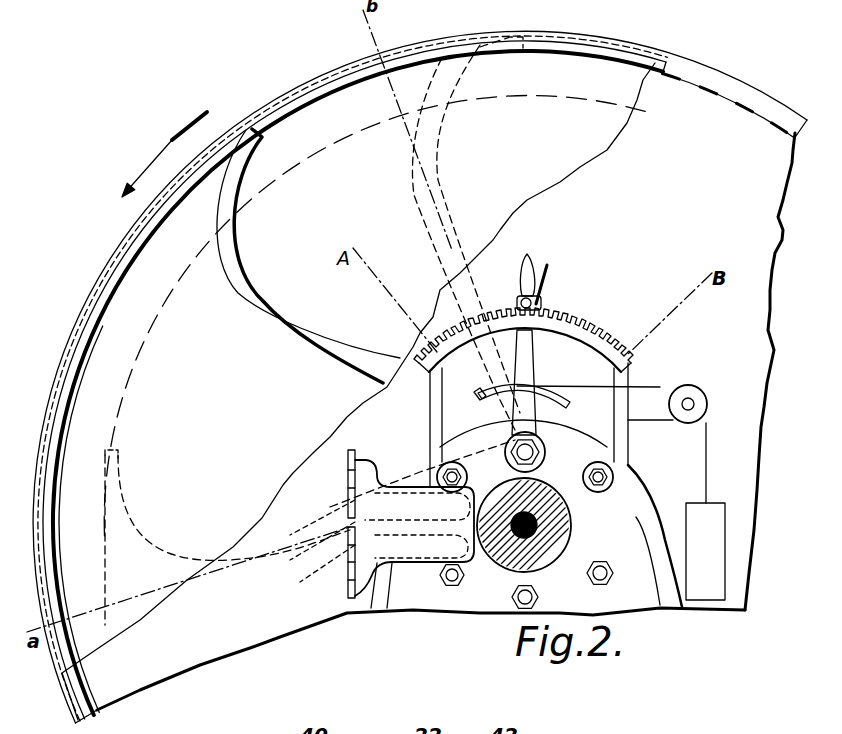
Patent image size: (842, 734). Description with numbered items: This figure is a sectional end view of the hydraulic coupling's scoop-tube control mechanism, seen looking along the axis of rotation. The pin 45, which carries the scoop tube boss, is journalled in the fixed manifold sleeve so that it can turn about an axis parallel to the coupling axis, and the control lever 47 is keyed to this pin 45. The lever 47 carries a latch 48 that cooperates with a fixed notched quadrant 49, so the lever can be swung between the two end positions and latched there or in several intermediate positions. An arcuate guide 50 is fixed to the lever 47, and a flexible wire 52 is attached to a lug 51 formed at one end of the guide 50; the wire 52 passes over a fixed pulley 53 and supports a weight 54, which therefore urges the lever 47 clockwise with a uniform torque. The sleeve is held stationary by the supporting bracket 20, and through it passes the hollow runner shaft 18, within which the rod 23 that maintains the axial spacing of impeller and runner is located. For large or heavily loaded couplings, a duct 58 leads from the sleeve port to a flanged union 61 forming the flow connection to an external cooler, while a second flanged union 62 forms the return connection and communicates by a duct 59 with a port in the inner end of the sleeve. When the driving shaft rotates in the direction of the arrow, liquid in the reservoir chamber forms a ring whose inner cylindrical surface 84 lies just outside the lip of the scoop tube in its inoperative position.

The inner cylindrical surface 84 is at (130, 381).
The control lever 47 is at (531, 266).
The latch 48 is at (552, 270).
The fixed notched quadrant 49 is at (572, 320).
The lug 51 is at (476, 393).
The flexible wire 52 is at (571, 386).
The arcuate guide 50 is at (568, 405).
The fixed pulley 53 is at (700, 398).
The pin 45 is at (540, 451).
The weight 54 is at (727, 503).
The flanged union 61 is at (360, 455).
The duct 58 is at (355, 490).
The duct 59 is at (346, 566).
The flanged union 62 is at (348, 597).
The rod 23 is at (545, 524).
The hollow runner shaft 18 is at (560, 550).
The supporting bracket 20 is at (372, 603).